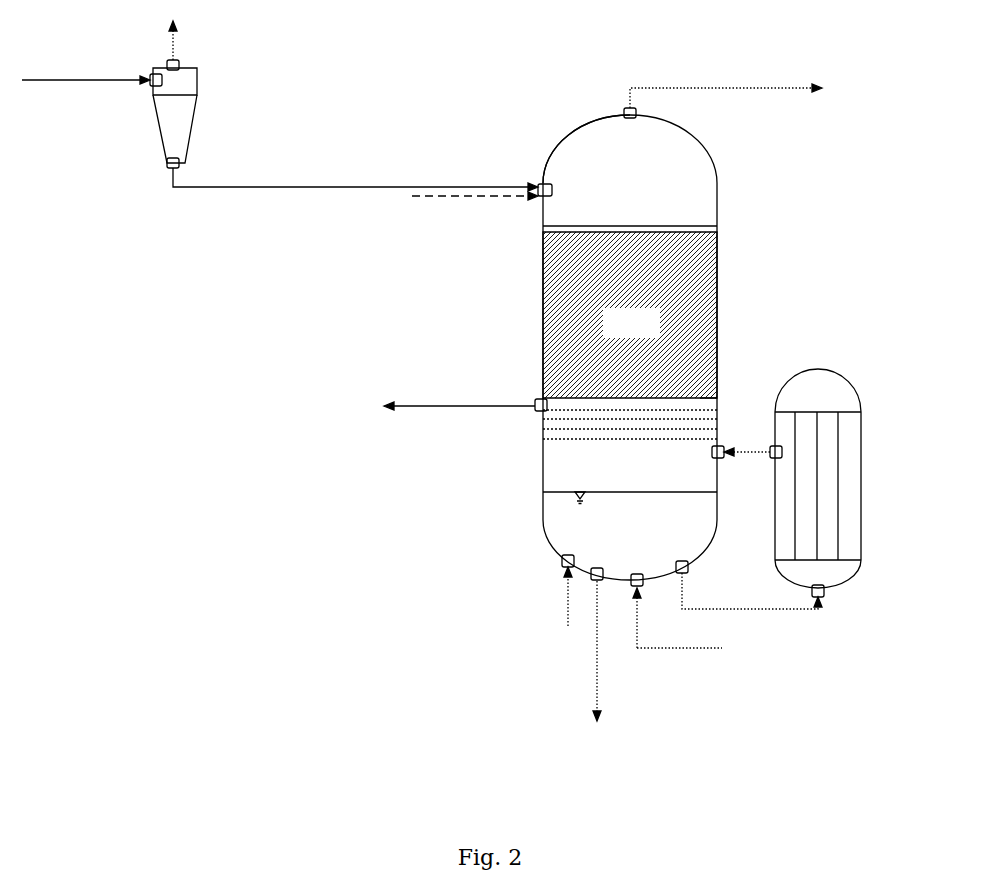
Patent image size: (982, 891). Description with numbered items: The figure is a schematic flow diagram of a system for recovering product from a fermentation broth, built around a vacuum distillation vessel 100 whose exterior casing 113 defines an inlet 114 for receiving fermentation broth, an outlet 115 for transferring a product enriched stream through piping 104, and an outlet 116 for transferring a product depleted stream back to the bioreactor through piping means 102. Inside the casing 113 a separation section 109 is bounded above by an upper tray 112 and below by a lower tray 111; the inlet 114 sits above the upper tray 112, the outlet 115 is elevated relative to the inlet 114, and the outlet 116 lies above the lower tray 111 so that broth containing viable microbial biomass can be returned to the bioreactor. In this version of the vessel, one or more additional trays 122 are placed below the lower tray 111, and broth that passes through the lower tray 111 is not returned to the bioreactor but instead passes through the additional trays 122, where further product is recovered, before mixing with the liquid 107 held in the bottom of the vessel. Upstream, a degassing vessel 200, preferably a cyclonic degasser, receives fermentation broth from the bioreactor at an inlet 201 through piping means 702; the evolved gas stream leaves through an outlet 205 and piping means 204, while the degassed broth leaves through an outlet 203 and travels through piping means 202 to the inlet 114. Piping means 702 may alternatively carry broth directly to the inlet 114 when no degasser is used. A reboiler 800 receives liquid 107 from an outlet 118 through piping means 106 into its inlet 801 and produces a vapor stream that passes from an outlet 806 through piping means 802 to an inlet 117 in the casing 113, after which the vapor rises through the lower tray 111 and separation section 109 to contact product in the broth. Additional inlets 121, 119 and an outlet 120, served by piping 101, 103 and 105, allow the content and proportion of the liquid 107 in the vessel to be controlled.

The vacuum distillation vessel 100 is at (754, 230).
The piping 101 is at (551, 596).
The piping means 102 is at (459, 398).
The piping 103 is at (677, 618).
The piping 104 is at (726, 86).
The piping 105 is at (581, 651).
The piping means 106 is at (752, 592).
The liquid 107 is at (630, 508).
The separation section 109 is at (630, 315).
The lower tray 111 is at (716, 395).
The upper tray 112 is at (571, 226).
The exterior casing 113 is at (547, 160).
The inlet 114 is at (538, 200).
The outlet 115 is at (622, 113).
The outlet 116 is at (535, 402).
The inlet 117 is at (722, 460).
The outlet 118 is at (689, 567).
The inlet 119 is at (643, 586).
The outlet 120 is at (600, 581).
The inlet 121 is at (562, 561).
The additional trays 122 is at (543, 436).
The degassing vessel 200 is at (232, 74).
The inlet 201 is at (150, 88).
The piping means 202 is at (355, 179).
The outlet 203 is at (168, 170).
The piping means 204 is at (189, 40).
The outlet 205 is at (165, 62).
The piping means 702 is at (280, 140).
The reboiler 800 is at (890, 436).
The inlet 801 is at (826, 594).
The piping means 802 is at (747, 442).
The outlet 806 is at (772, 445).